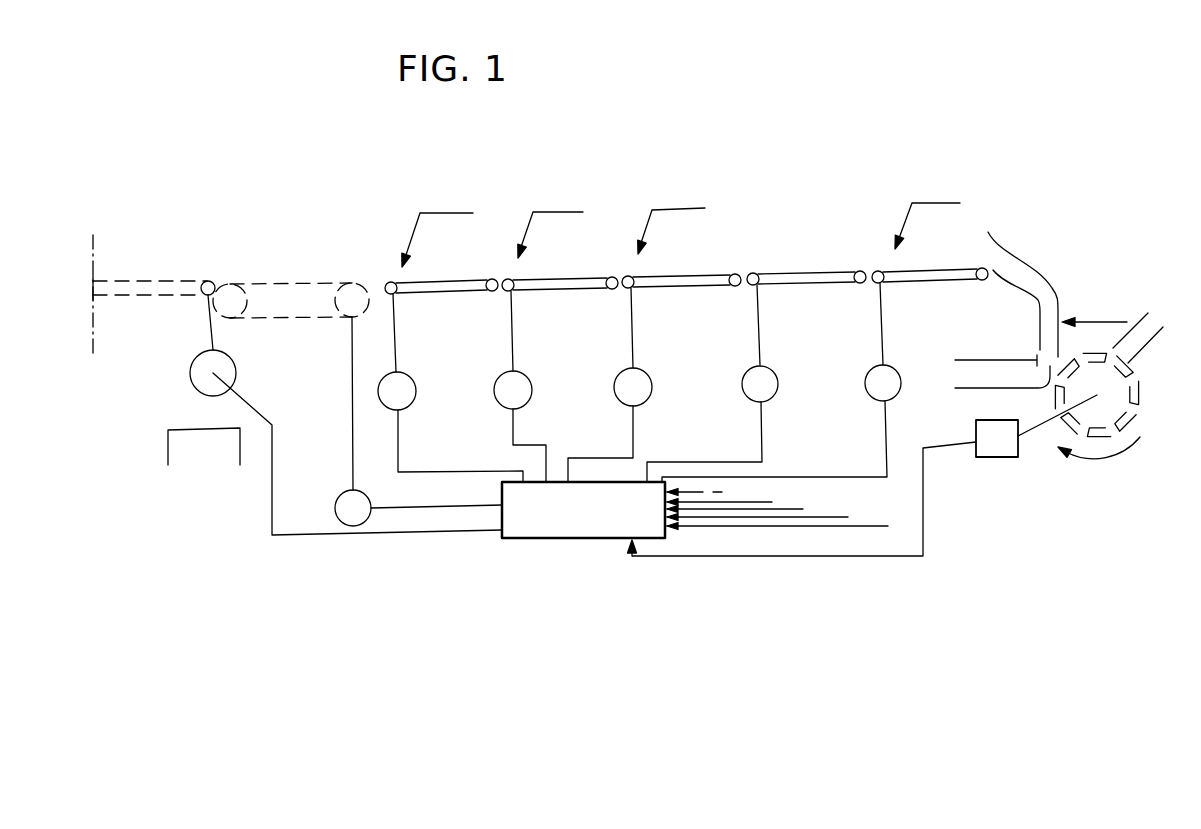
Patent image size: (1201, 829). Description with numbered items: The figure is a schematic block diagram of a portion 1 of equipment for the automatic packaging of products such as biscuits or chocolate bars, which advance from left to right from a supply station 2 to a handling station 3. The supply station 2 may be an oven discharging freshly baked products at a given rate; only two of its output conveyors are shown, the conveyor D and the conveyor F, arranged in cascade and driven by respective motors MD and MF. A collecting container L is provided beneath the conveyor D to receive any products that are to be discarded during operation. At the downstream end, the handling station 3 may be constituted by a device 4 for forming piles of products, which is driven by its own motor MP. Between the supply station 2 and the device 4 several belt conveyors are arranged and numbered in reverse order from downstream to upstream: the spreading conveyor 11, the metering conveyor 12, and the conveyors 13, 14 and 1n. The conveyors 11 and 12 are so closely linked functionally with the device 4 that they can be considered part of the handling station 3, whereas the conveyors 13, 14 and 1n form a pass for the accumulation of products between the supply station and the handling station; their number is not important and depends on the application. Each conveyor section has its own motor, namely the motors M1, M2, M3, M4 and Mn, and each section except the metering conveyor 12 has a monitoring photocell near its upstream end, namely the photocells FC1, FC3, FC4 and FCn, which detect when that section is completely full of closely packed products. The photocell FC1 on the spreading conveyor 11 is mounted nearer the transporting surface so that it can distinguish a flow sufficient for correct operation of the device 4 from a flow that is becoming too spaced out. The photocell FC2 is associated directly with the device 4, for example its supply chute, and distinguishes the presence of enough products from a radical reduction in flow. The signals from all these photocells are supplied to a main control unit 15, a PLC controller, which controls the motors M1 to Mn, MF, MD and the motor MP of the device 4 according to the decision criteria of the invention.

The equipment portion 1 is at (723, 190).
The supply station 2 is at (313, 212).
The handling station 3 is at (965, 178).
The pile-forming device 4 is at (1026, 240).
The spreading conveyor 11 is at (947, 272).
The metering conveyor 12 is at (812, 274).
The accumulation conveyor 13 is at (688, 278).
The accumulation conveyor 14 is at (572, 280).
The n-th accumulation conveyor 1n is at (459, 282).
The main control unit 15 is at (546, 540).
The output conveyor D is at (142, 276).
The output conveyor F is at (273, 278).
The collecting container L is at (168, 460).
The motor of conveyor D MD is at (190, 373).
The motor of conveyor F MF is at (344, 495).
The motor of conveyor 1n Mn is at (412, 410).
The motor of conveyor 14 M4 is at (527, 400).
The motor of conveyor 13 M3 is at (647, 400).
The motor of conveyor 12 M2 is at (775, 396).
The motor of conveyor 11 M1 is at (897, 394).
The device motor MP is at (985, 458).
The monitoring photocell FC1 is at (915, 203).
The device photocell FC2 is at (1095, 322).
The monitoring photocell FC3 is at (652, 210).
The monitoring photocell FC4 is at (560, 212).
The monitoring photocell FCn is at (445, 213).